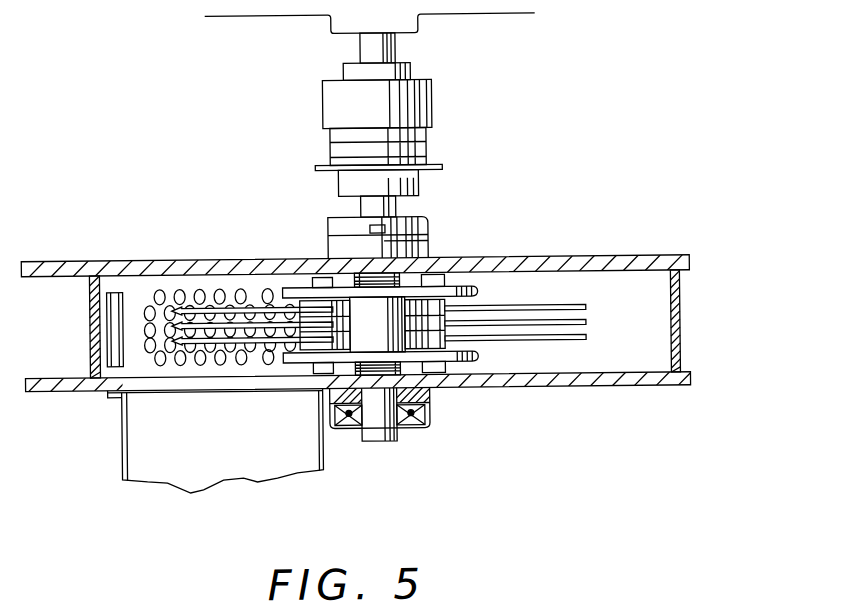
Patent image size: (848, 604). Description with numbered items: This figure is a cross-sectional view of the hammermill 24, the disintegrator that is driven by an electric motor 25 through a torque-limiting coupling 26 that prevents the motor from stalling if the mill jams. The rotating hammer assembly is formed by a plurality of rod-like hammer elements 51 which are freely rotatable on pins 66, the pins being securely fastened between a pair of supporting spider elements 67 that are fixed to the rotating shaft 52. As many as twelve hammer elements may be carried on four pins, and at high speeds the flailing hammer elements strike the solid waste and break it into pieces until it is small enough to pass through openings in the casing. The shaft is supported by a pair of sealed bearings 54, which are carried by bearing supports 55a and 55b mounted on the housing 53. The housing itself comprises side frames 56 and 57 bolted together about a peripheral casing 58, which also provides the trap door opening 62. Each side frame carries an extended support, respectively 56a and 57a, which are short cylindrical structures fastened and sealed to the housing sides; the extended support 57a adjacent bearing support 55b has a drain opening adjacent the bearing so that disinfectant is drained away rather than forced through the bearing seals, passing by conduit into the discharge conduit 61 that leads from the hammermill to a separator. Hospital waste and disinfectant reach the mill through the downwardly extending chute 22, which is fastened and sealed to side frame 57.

The chute 22 is at (121, 434).
The hammermill 24 is at (666, 203).
The electric motor 25 is at (468, 14).
The coupling 26 is at (434, 99).
The hammer elements 51 is at (172, 339).
The rotating shaft 52 is at (379, 430).
The housing 53 is at (608, 432).
The sealed bearings 54 is at (407, 420).
The bearing support 55a is at (348, 220).
The bearing support 55b is at (430, 420).
The side frame 56 is at (587, 265).
The extended support 56a is at (413, 247).
The side frame 57 is at (566, 387).
The extended support 57a is at (428, 394).
The peripheral casing 58 is at (93, 295).
The discharge conduit 61 is at (215, 368).
The trap door opening 62 is at (115, 290).
The pins 66 is at (446, 284).
The spider elements 67 is at (515, 324).